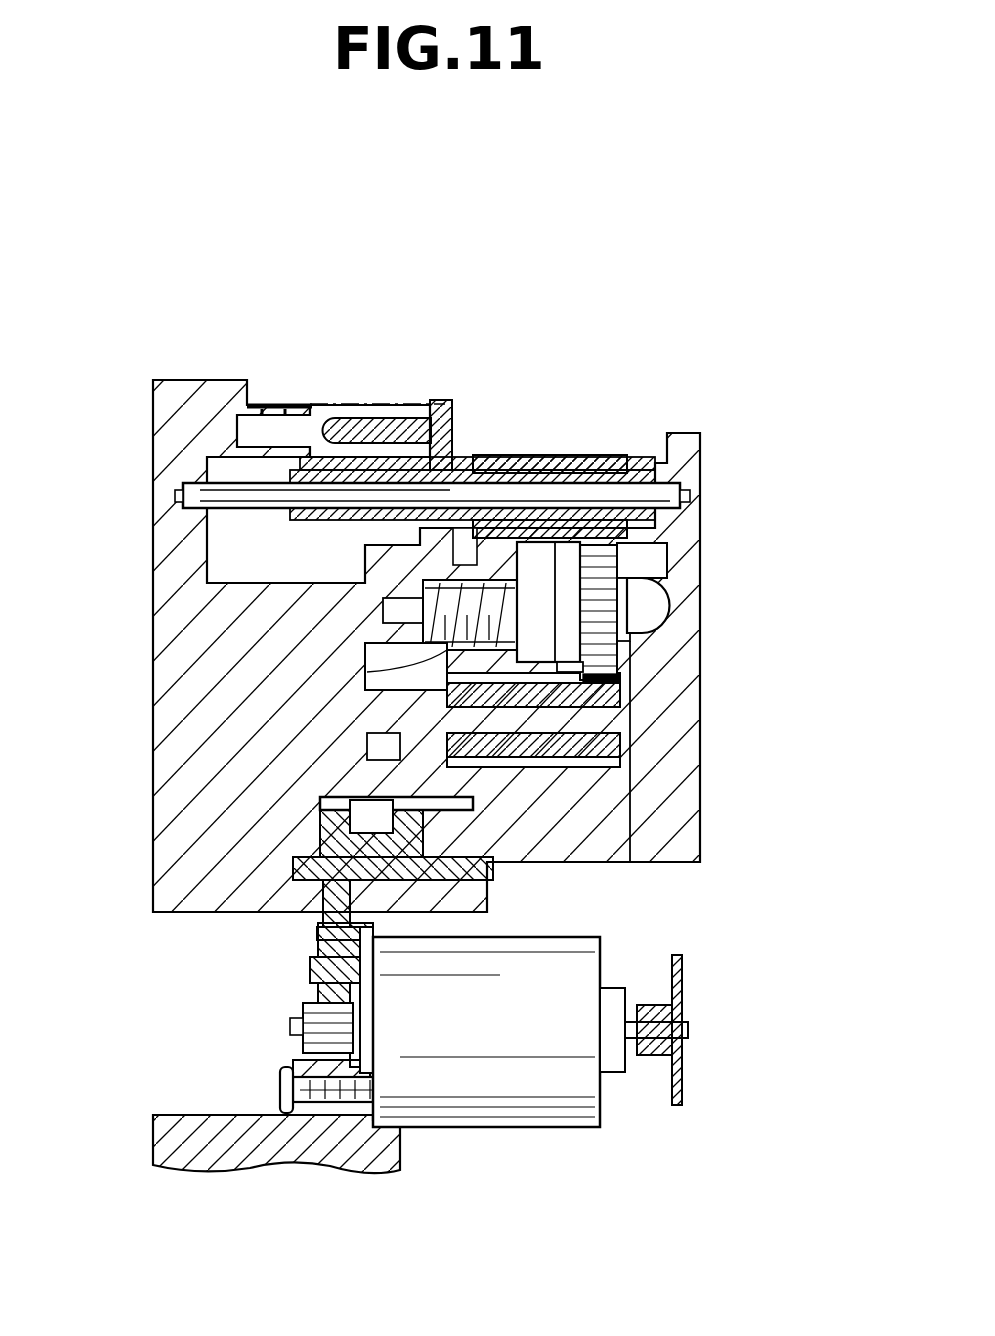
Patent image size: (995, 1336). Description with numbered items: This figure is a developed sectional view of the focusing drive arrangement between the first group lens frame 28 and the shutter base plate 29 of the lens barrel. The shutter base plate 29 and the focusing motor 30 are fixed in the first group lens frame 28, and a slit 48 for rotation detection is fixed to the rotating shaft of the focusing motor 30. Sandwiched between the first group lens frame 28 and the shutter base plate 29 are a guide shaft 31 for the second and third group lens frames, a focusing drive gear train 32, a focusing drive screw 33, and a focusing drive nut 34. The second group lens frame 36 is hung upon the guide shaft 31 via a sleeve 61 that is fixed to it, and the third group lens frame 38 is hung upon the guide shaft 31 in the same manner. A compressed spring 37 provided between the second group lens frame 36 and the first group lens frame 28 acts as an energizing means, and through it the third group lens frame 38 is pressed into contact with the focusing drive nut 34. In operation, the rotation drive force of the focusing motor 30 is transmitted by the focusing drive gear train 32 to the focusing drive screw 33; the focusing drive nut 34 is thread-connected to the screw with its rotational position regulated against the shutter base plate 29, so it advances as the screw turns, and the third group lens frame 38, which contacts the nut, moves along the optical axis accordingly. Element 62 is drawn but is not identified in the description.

The first group lens frame 28 is at (190, 912).
The shutter base plate 29 is at (663, 868).
The focusing motor 30 is at (498, 1080).
The guide shaft 31 is at (660, 497).
The focusing drive gear train 32 is at (765, 1051).
The focusing drive screw 33 is at (440, 645).
The focusing drive nut 34 is at (537, 578).
The second group lens frame 36 is at (413, 403).
The compressed spring 37 is at (333, 400).
The third group lens frame 38 is at (612, 462).
The slit 48 is at (648, 1058).
The sleeve 61 is at (268, 420).
The bearing 62 is at (466, 470).